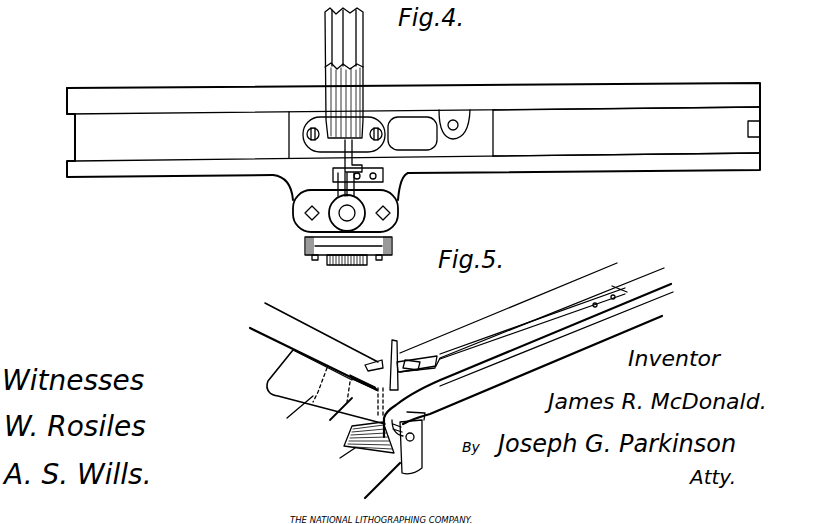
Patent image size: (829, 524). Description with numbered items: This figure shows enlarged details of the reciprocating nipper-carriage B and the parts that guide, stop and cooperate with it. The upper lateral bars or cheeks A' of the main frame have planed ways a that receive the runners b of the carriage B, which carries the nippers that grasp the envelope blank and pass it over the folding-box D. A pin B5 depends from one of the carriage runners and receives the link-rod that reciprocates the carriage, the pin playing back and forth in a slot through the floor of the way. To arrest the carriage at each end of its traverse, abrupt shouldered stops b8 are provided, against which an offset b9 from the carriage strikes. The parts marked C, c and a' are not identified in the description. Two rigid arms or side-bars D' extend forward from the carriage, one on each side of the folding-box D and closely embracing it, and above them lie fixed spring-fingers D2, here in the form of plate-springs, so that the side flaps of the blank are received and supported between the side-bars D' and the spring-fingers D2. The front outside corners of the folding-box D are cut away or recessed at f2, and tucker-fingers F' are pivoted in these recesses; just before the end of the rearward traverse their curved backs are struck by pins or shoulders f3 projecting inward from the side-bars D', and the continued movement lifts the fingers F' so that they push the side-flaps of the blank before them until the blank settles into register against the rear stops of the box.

In FIG. 4, the upper lateral bars or cheeks A' is at (413, 107).
In FIG. 4, the planed ways a is at (626, 131).
In FIG. 5, the planed ways a is at (312, 387).
In FIG. 4, the runners b is at (490, 150).
In FIG. 4, the reciprocating carriage B is at (330, 78).
In FIG. 4, the pin B5 is at (456, 121).
In FIG. 4, the abrupt shouldered stops b8 is at (758, 121).
In FIG. 4, the offset b9 is at (352, 161).
In FIG. 4, the carriage C is at (340, 216).
In FIG. 4, the roller c is at (420, 231).
In FIG. 5, the folding-box D is at (314, 341).
In FIG. 5, the rigid arms or side-bars D' is at (528, 352).
In FIG. 5, the fixed spring-fingers D2 is at (426, 352).
In FIG. 5, the tucker-fingers F' is at (390, 337).
In FIG. 5, the lug a' is at (410, 373).
In FIG. 5, the pins or shoulders f3 is at (372, 365).
In FIG. 5, the recesses f2 is at (355, 441).